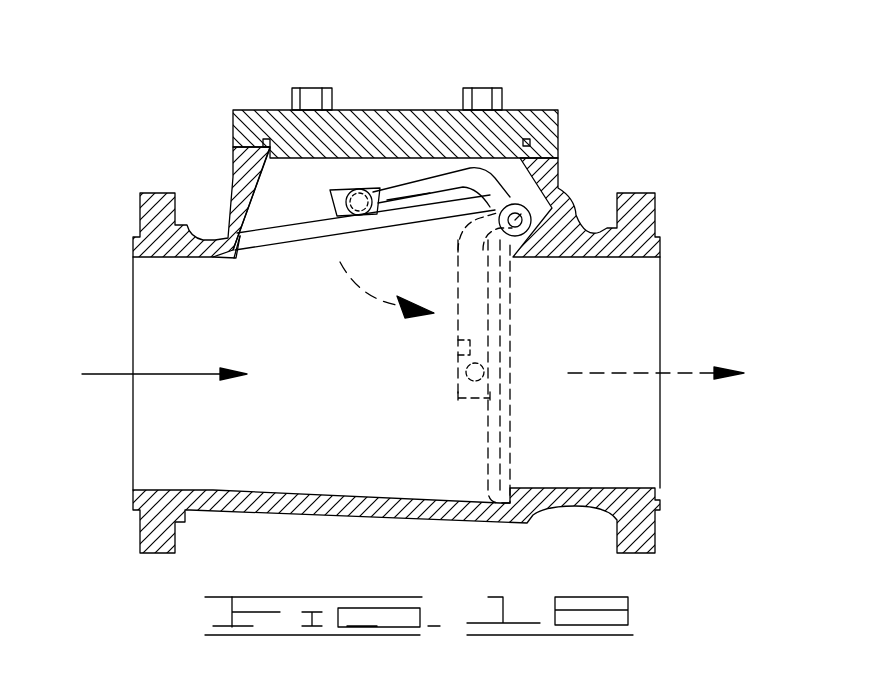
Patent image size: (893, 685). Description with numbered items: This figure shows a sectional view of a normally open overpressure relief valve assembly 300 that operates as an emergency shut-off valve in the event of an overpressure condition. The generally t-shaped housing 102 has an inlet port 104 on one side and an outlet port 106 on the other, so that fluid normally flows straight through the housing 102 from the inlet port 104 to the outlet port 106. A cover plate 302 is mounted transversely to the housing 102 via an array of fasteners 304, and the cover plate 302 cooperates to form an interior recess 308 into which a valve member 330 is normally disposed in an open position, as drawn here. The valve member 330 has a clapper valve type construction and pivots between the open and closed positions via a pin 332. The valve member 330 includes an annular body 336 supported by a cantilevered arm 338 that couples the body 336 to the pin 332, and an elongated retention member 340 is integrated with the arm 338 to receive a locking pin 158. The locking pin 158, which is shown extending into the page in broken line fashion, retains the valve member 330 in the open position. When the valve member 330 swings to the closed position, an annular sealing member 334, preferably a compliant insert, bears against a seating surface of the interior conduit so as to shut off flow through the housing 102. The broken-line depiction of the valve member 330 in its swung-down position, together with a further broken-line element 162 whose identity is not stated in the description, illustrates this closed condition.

The valve assembly 300 is at (186, 133).
The housing 102 is at (213, 221).
The inlet port 104 is at (172, 258).
The outlet port 106 is at (633, 258).
The interior recess 308 is at (268, 209).
The cover plate 302 is at (418, 112).
The fasteners 304 is at (312, 88).
The annular sealing member 334 is at (540, 262).
The valve member 330 is at (260, 256).
The annular body 336 is at (293, 243).
The cantilevered arm 338 is at (443, 183).
The elongated retention member 340 is at (383, 190).
The pin 332 is at (520, 205).
The locking pin 158 is at (340, 196).
The pin 162 is at (462, 372).